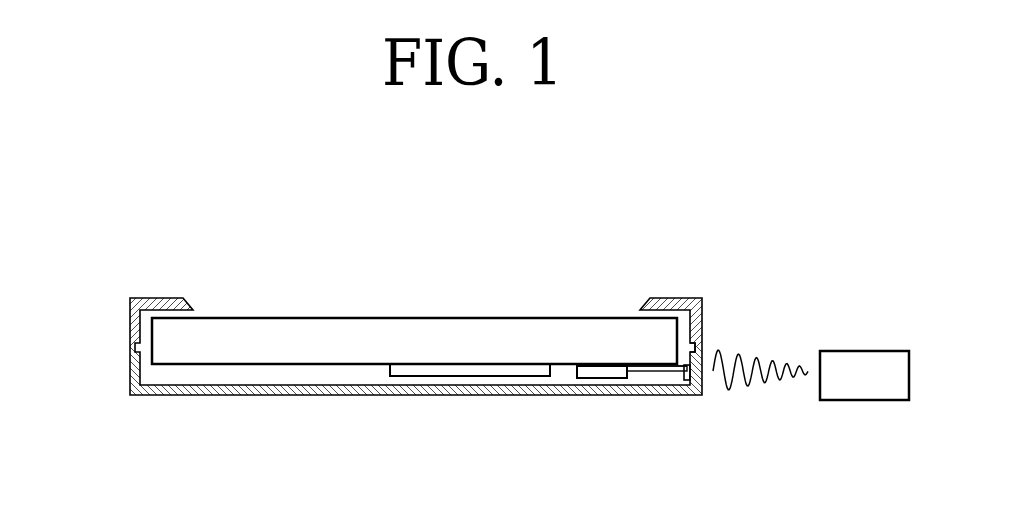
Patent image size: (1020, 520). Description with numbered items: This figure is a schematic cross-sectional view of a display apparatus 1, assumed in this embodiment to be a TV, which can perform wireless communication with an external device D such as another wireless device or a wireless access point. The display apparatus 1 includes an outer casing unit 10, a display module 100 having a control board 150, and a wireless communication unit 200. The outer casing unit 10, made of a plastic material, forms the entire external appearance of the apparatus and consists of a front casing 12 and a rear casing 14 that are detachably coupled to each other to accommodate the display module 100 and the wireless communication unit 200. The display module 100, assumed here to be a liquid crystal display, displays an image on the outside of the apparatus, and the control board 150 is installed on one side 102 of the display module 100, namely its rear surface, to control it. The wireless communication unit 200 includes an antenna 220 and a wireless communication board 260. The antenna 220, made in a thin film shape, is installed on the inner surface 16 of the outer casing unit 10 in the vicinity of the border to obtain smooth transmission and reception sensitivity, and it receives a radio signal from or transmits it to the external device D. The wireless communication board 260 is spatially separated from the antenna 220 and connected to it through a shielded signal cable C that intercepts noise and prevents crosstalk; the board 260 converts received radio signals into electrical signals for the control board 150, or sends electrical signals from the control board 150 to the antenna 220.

The display apparatus 1 is at (492, 190).
The outer casing unit 10 is at (80, 325).
The front casing 12 is at (134, 326).
The rear casing 14 is at (134, 368).
The inner surface 16 is at (694, 345).
The display module 100 is at (363, 303).
The one side 102 is at (562, 365).
The control board 150 is at (431, 376).
The wireless communication unit 200 is at (690, 462).
The antenna 220 is at (684, 382).
The wireless communication board 260 is at (609, 379).
The signal cable C is at (657, 370).
The external device D is at (868, 357).